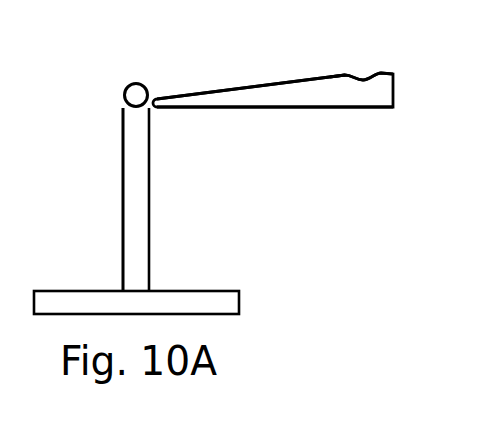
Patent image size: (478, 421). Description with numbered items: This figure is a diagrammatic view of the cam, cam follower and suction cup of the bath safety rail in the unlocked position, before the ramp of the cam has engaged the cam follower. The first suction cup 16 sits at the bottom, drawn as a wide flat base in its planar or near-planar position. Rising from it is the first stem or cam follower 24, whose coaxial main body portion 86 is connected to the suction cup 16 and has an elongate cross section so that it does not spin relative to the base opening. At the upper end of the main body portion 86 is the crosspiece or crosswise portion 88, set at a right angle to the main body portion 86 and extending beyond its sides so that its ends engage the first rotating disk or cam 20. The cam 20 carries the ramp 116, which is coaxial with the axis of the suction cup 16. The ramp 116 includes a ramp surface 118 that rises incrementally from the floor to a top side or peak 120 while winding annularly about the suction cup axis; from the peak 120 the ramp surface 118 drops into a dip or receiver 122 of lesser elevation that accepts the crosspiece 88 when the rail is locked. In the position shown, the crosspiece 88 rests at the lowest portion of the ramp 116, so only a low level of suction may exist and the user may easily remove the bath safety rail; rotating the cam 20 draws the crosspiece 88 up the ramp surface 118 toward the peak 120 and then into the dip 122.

The first suction cup 16 is at (203, 290).
The first rotating disk or cam 20 is at (360, 109).
The first stem or cam follower 24 is at (149, 202).
The main body portion 86 is at (123, 152).
The crosspiece or crosswise portion 88 is at (135, 82).
The ramp 116 is at (277, 108).
The ramp surface 118 is at (268, 83).
The top side or peak 120 is at (338, 73).
The dip or receiver 122 is at (365, 75).